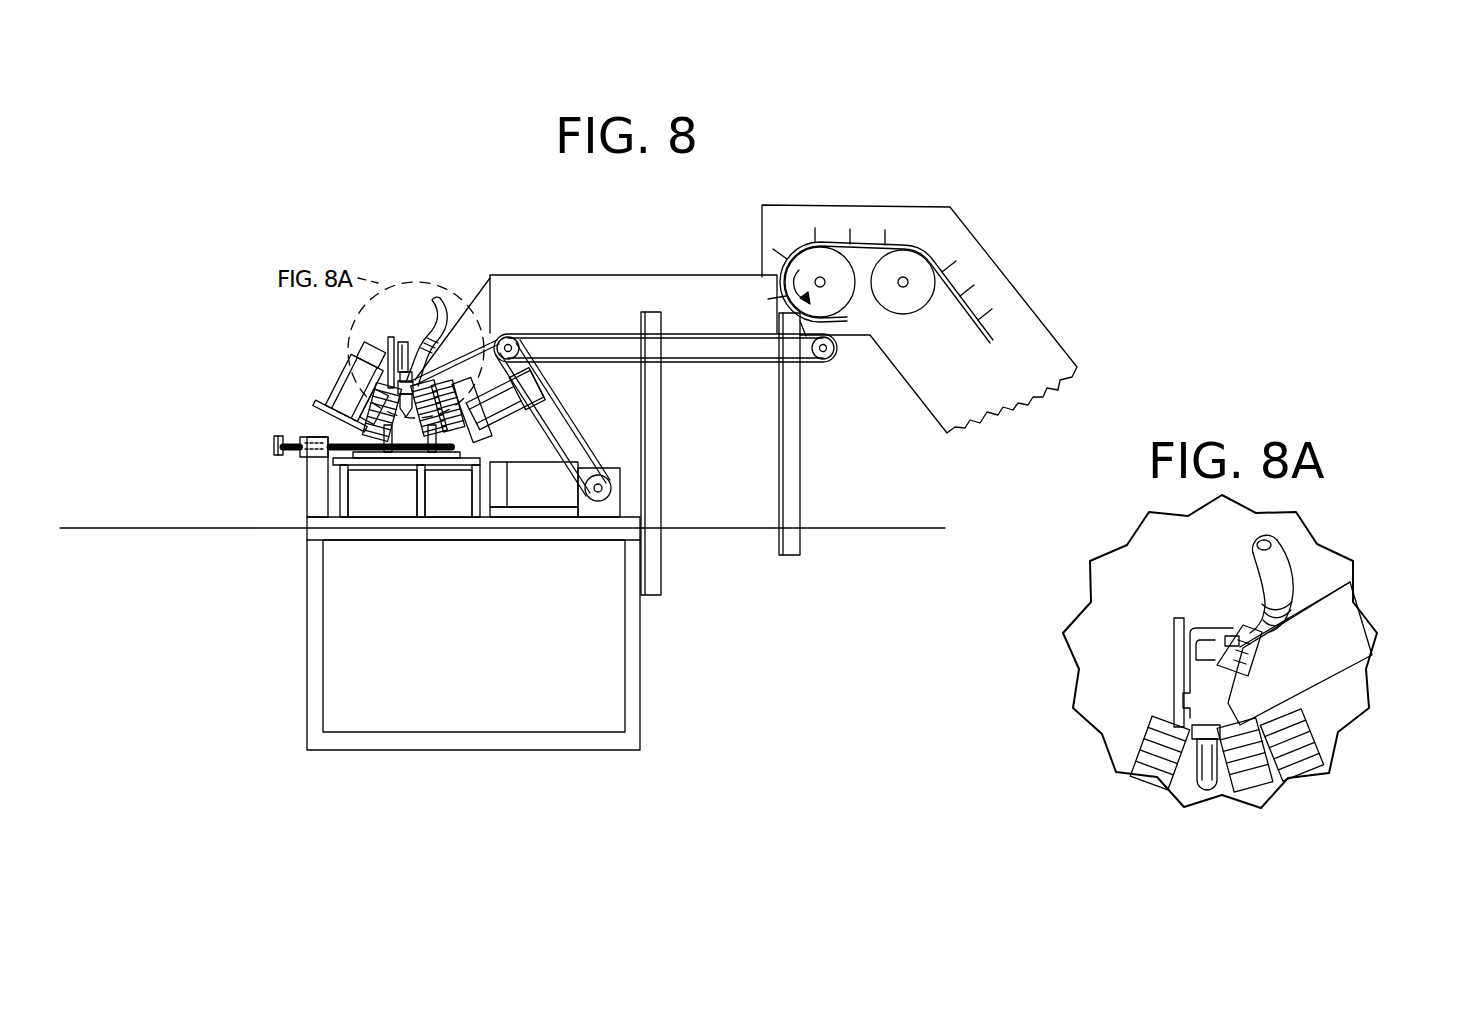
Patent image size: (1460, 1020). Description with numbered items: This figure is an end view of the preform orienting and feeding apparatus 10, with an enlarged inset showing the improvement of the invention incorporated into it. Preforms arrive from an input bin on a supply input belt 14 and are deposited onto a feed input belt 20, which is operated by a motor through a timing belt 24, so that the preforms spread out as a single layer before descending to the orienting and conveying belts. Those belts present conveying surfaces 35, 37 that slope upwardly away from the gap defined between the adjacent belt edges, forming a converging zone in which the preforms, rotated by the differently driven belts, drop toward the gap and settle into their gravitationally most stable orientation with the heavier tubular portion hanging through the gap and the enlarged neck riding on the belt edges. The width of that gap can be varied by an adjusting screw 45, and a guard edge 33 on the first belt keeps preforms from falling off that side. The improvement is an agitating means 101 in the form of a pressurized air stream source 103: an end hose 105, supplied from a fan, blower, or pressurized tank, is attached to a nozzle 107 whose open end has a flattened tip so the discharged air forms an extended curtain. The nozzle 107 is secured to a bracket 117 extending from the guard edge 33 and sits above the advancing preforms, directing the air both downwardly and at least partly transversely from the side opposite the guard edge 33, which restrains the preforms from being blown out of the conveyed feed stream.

In FIG. 8, the apparatus 10 is at (598, 234).
In FIG. 8, the supply input belt 14 is at (880, 247).
In FIG. 8, the feed input belt 20 is at (706, 350).
In FIG. 8, the timing belt 24 is at (562, 398).
In FIG. 8, the guard edge 33 is at (390, 352).
In FIG. 8, the conveying surface 35 is at (323, 362).
In FIG. 8, the conveying surface 37 is at (455, 420).
In FIG. 8, the adjusting screw 45 is at (274, 440).
In FIG. 8A, the agitating means 101 is at (1208, 587).
In FIG. 8A, the pressurized air stream source 103 is at (1208, 620).
In FIG. 8A, the end hose 105 is at (1290, 580).
In FIG. 8A, the nozzle 107 is at (1245, 660).
In FIG. 8A, the bracket 117 is at (1176, 643).